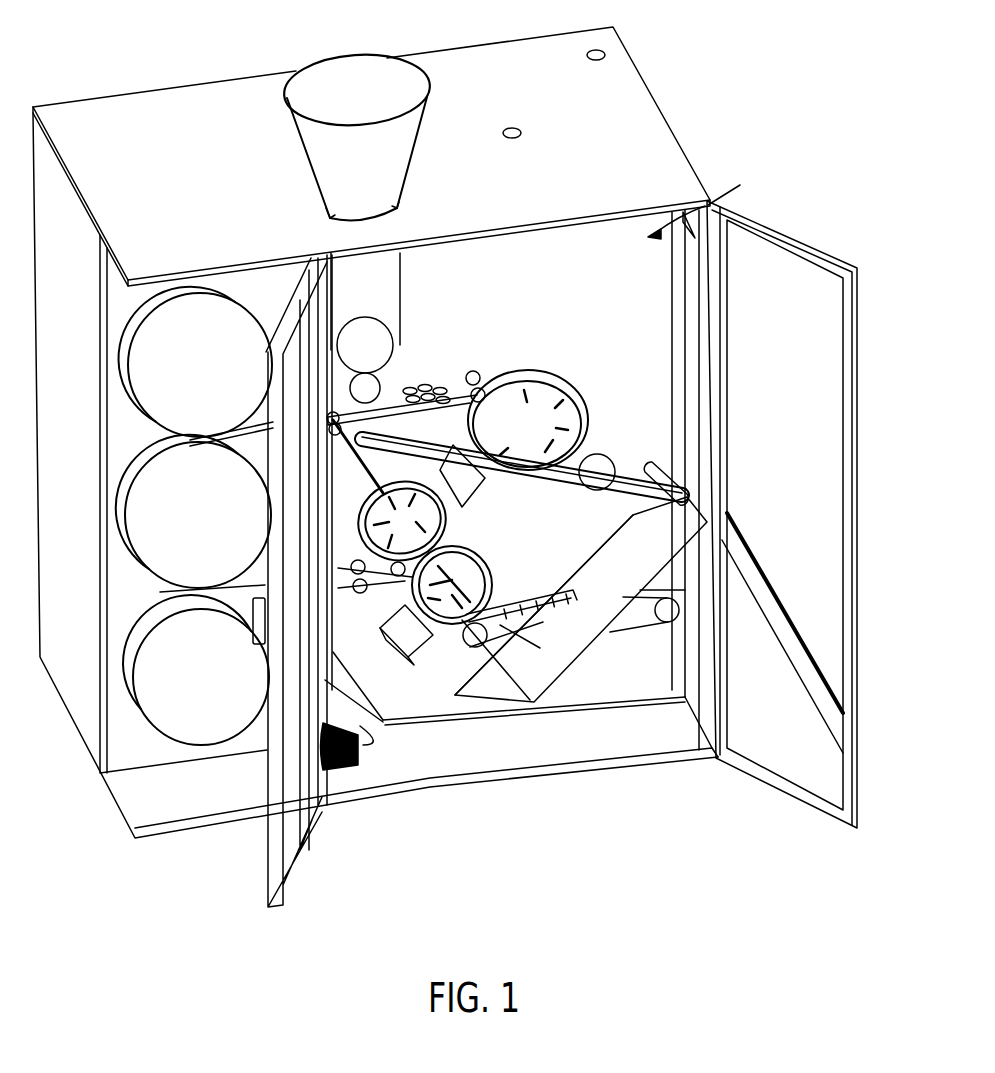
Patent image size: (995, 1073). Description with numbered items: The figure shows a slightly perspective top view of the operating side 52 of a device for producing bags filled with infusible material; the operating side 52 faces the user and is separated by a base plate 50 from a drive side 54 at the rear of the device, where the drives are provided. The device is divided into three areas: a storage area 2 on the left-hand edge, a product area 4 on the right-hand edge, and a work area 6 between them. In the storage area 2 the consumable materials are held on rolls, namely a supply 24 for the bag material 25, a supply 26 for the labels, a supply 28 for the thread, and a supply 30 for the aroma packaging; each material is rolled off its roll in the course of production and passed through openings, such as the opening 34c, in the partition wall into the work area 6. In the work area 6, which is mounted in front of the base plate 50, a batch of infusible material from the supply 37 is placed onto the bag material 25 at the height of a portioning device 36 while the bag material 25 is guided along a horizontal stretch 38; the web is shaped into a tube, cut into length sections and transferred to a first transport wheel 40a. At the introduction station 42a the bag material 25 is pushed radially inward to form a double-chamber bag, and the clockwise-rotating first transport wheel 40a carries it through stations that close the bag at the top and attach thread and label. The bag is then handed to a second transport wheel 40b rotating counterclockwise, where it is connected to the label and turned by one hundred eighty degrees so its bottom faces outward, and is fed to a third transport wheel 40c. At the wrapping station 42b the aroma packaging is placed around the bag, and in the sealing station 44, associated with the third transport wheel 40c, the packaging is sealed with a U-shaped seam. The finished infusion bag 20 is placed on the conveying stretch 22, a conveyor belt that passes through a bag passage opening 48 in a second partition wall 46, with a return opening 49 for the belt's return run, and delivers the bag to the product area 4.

The drive side 54 is at (113, 87).
The storage area 2 is at (183, 278).
The product area 4 is at (683, 705).
The work area 6 is at (483, 244).
The supply for infusible material 37 is at (344, 174).
The portioning device 36 is at (346, 300).
The bag material 25 is at (395, 398).
The horizontal stretch 38 is at (409, 392).
The introduction station 42a is at (508, 380).
The first transport wheel 40a is at (561, 381).
The base plate 50 is at (538, 285).
The operating side 52 is at (702, 280).
The supply for bag material 24 is at (168, 382).
The supply for the labels 26 is at (168, 532).
The supply for the aroma packaging 30 is at (168, 694).
The guide bar 34c is at (630, 517).
The second transport wheel 40b is at (452, 524).
The third transport wheel 40c is at (499, 582).
The wrapping station 42b is at (405, 580).
The sealing station 44 is at (437, 636).
The second partition wall 46 is at (680, 524).
The bag passage opening 48 is at (574, 597).
The conveying stretch 22 is at (648, 637).
The return opening 49 is at (544, 650).
The finished infusion bag 20 is at (503, 623).
The supply for the thread 28 is at (345, 771).